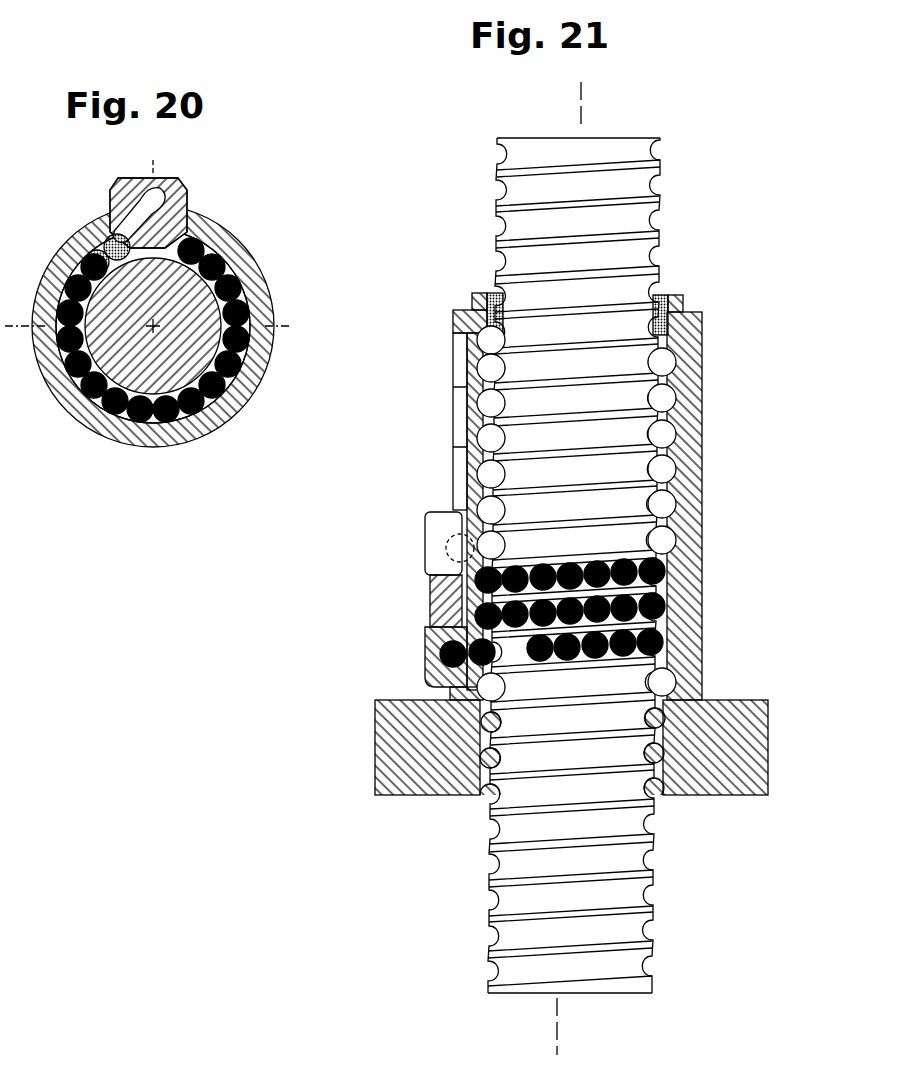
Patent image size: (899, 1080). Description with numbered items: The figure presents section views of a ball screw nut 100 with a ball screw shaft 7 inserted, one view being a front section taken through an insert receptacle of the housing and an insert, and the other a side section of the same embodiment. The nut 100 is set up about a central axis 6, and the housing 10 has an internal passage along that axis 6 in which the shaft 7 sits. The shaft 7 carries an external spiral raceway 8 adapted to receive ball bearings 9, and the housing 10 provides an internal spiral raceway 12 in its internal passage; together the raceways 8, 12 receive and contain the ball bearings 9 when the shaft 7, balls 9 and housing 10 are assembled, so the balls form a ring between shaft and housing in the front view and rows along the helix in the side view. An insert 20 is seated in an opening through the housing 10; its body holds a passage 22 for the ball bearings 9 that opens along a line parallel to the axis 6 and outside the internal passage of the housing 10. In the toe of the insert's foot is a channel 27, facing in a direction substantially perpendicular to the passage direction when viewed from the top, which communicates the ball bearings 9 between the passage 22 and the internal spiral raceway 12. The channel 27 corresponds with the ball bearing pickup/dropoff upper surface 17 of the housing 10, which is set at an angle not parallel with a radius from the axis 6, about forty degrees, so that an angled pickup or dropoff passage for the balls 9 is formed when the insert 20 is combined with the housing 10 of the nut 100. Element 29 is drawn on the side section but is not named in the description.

In FIG. 20, the central axis 6 is at (150, 328).
In FIG. 21, the central axis 6 is at (596, 105).
In FIG. 20, the ball screw shaft 7 is at (195, 310).
In FIG. 21, the ball screw shaft 7 is at (632, 136).
In FIG. 20, the external spiral raceway 8 is at (220, 292).
In FIG. 21, the external spiral raceway 8 is at (495, 398).
In FIG. 20, the ball bearings 9 is at (232, 278).
In FIG. 21, the ball bearings 9 is at (666, 583).
In FIG. 20, the housing 10 is at (270, 340).
In FIG. 21, the housing 10 is at (702, 612).
In FIG. 20, the internal spiral raceway 12 is at (218, 262).
In FIG. 21, the internal spiral raceway 12 is at (490, 440).
In FIG. 20, the ball bearing pickup/dropoff upper surface 17 is at (112, 240).
In FIG. 20, the insert 20 is at (180, 187).
In FIG. 21, the insert 20 is at (430, 520).
In FIG. 20, the passage 22 is at (160, 200).
In FIG. 20, the channel 27 is at (135, 245).
In FIG. 21, the ball circulation member 29 is at (430, 588).
In FIG. 20, the ball screw nut 100 is at (174, 315).